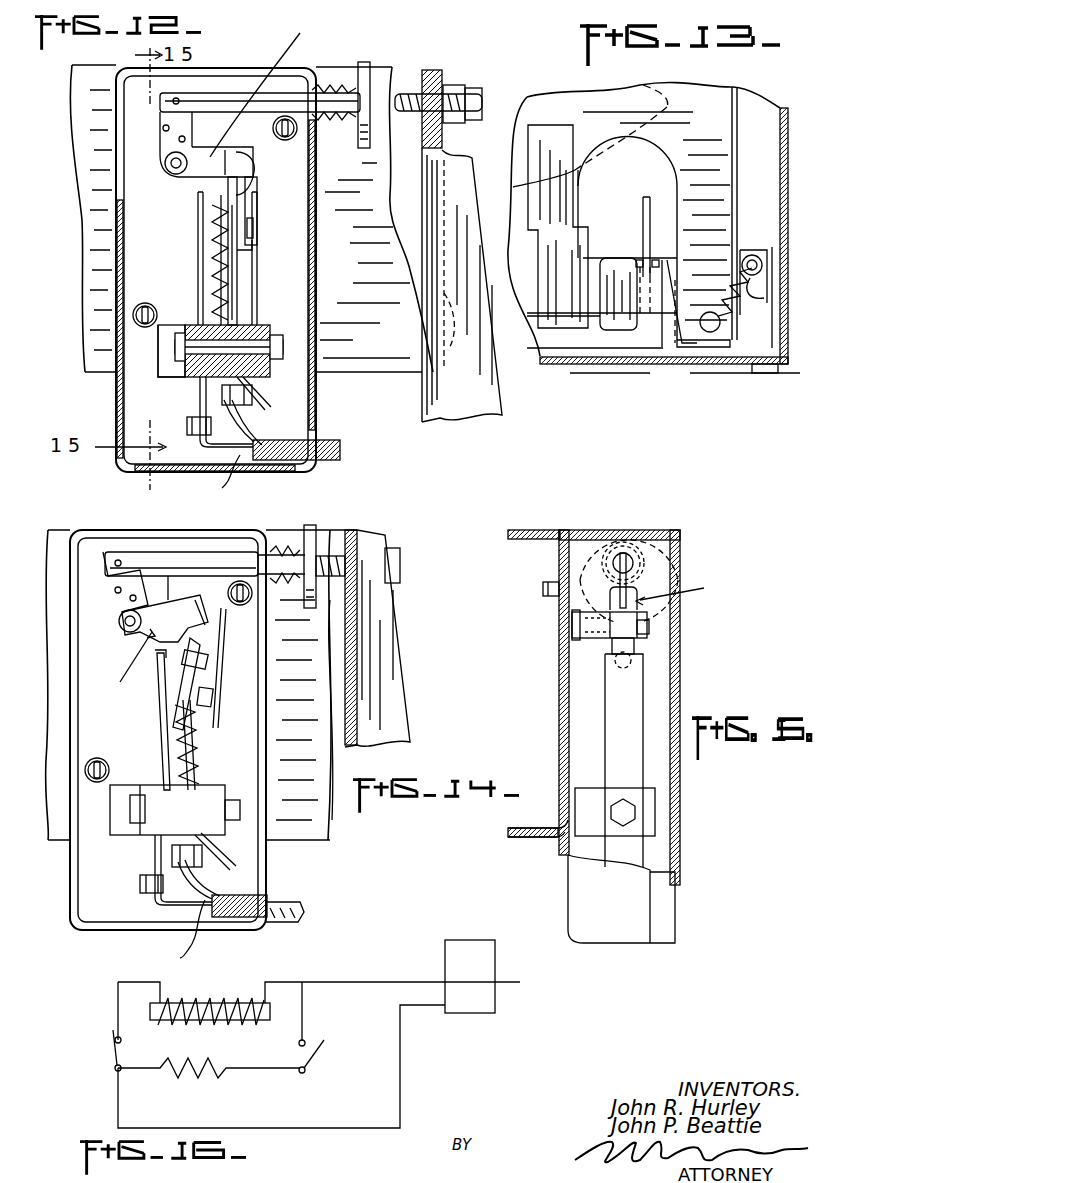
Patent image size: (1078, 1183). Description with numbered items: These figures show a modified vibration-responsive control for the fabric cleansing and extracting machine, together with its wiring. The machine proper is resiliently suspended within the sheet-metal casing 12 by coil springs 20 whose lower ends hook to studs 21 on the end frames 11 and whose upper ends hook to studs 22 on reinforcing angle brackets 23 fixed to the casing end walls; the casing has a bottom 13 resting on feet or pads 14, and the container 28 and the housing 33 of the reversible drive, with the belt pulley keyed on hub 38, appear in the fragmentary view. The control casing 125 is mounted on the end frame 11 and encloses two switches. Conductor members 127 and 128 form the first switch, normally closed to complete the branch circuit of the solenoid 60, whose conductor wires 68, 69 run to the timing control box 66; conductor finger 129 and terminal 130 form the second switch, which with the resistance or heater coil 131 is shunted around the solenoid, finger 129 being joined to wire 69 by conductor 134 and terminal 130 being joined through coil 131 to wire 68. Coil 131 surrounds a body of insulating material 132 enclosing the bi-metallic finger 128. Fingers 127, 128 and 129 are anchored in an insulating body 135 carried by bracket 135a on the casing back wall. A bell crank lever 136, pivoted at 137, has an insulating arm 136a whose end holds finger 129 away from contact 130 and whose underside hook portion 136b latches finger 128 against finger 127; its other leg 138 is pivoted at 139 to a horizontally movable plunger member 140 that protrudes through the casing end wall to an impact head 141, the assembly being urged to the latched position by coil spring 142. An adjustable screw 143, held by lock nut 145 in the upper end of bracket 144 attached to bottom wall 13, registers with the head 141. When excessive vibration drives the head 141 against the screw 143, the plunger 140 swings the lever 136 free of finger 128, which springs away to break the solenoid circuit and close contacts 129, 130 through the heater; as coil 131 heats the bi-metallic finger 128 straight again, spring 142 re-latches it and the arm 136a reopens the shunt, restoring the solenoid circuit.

In FIG. 12, the end frame 11 is at (397, 350).
In FIG. 13, the end frame 11 is at (716, 186).
In FIG. 15, the end frame 11 is at (520, 530).
In FIG. 13, the casing 12 is at (786, 196).
In FIG. 13, the bottom 13 is at (648, 361).
In FIG. 13, the feet or pads 14 is at (766, 373).
In FIG. 13, the coil springs 20 is at (764, 298).
In FIG. 13, the studs 21 is at (718, 330).
In FIG. 13, the studs 22 is at (753, 255).
In FIG. 13, the reinforcing angle brackets 23 is at (770, 280).
In FIG. 13, the container 28 is at (646, 86).
In FIG. 13, the housing 33 is at (564, 322).
In FIG. 15, the hub 38 is at (640, 585).
In FIG. 16, the solenoid 60 is at (202, 1005).
In FIG. 16, the timing mechanism box 66 is at (465, 950).
In FIG. 12, the conductor wire 68 is at (228, 486).
In FIG. 13, the conductor wire 68 is at (646, 210).
In FIG. 14, the conductor wire 68 is at (280, 902).
In FIG. 16, the conductor wire 68 is at (358, 1130).
In FIG. 16, the conductor wire 69 is at (352, 982).
In FIG. 12, the casing 125 is at (314, 278).
In FIG. 13, the casing 125 is at (620, 315).
In FIG. 14, the casing 125 is at (265, 740).
In FIG. 15, the casing 125 is at (588, 555).
In FIG. 12, the conductor member 127 is at (200, 270).
In FIG. 14, the conductor member 127 is at (158, 725).
In FIG. 15, the conductor member 127 is at (640, 692).
In FIG. 16, the conductor member 127 is at (110, 1050).
In FIG. 12, the conductor member 128 is at (235, 195).
In FIG. 14, the conductor member 128 is at (198, 643).
In FIG. 15, the conductor member 128 is at (636, 646).
In FIG. 16, the conductor member 128 is at (114, 1046).
In FIG. 12, the conductor finger 129 is at (257, 255).
In FIG. 14, the conductor finger 129 is at (216, 680).
In FIG. 16, the conductor finger 129 is at (305, 1041).
In FIG. 12, the terminal 130 is at (252, 218).
In FIG. 14, the terminal 130 is at (212, 705).
In FIG. 16, the terminal 130 is at (320, 1047).
In FIG. 12, the resistance or heater coil 131 is at (216, 256).
In FIG. 14, the resistance or heater coil 131 is at (192, 725).
In FIG. 16, the resistance or heater coil 131 is at (212, 1080).
In FIG. 12, the body of insulating material 132 is at (222, 238).
In FIG. 14, the body of insulating material 132 is at (195, 745).
In FIG. 12, the conductor 134 is at (268, 436).
In FIG. 14, the conductor 134 is at (220, 876).
In FIG. 16, the conductor 134 is at (302, 1008).
In FIG. 12, the body of insulating material 135 is at (250, 330).
In FIG. 12, the bracket 135a is at (185, 362).
In FIG. 14, the bracket 135a is at (150, 825).
In FIG. 15, the bracket 135a is at (596, 795).
In FIG. 12, the bell crank lever 136 is at (190, 174).
In FIG. 14, the bell crank lever 136 is at (119, 622).
In FIG. 15, the bell crank lever 136 is at (642, 605).
In FIG. 12, the arm 136a is at (262, 134).
In FIG. 14, the arm 136a is at (178, 600).
In FIG. 12, the hook portion 136b is at (298, 160).
In FIG. 14, the hook portion 136b is at (195, 617).
In FIG. 12, the pivot 137 is at (166, 166).
In FIG. 14, the pivot 137 is at (128, 630).
In FIG. 15, the pivot 137 is at (650, 627).
In FIG. 12, the leg 138 is at (160, 118).
In FIG. 14, the leg 138 is at (110, 580).
In FIG. 12, the pivotal connection 139 is at (179, 100).
In FIG. 14, the pivotal connection 139 is at (118, 559).
In FIG. 12, the plunger member 140 is at (246, 95).
In FIG. 14, the plunger member 140 is at (155, 555).
In FIG. 15, the plunger member 140 is at (633, 563).
In FIG. 12, the impact head 141 is at (366, 80).
In FIG. 14, the impact head 141 is at (310, 608).
In FIG. 15, the impact head 141 is at (626, 545).
In FIG. 12, the coil spring 142 is at (330, 90).
In FIG. 14, the coil spring 142 is at (280, 546).
In FIG. 12, the adjustable screw 143 is at (400, 100).
In FIG. 13, the adjustable screw 143 is at (656, 260).
In FIG. 14, the adjustable screw 143 is at (336, 555).
In FIG. 12, the bracket 144 is at (428, 192).
In FIG. 13, the bracket 144 is at (664, 300).
In FIG. 14, the bracket 144 is at (378, 612).
In FIG. 12, the lock nut 145 is at (450, 85).